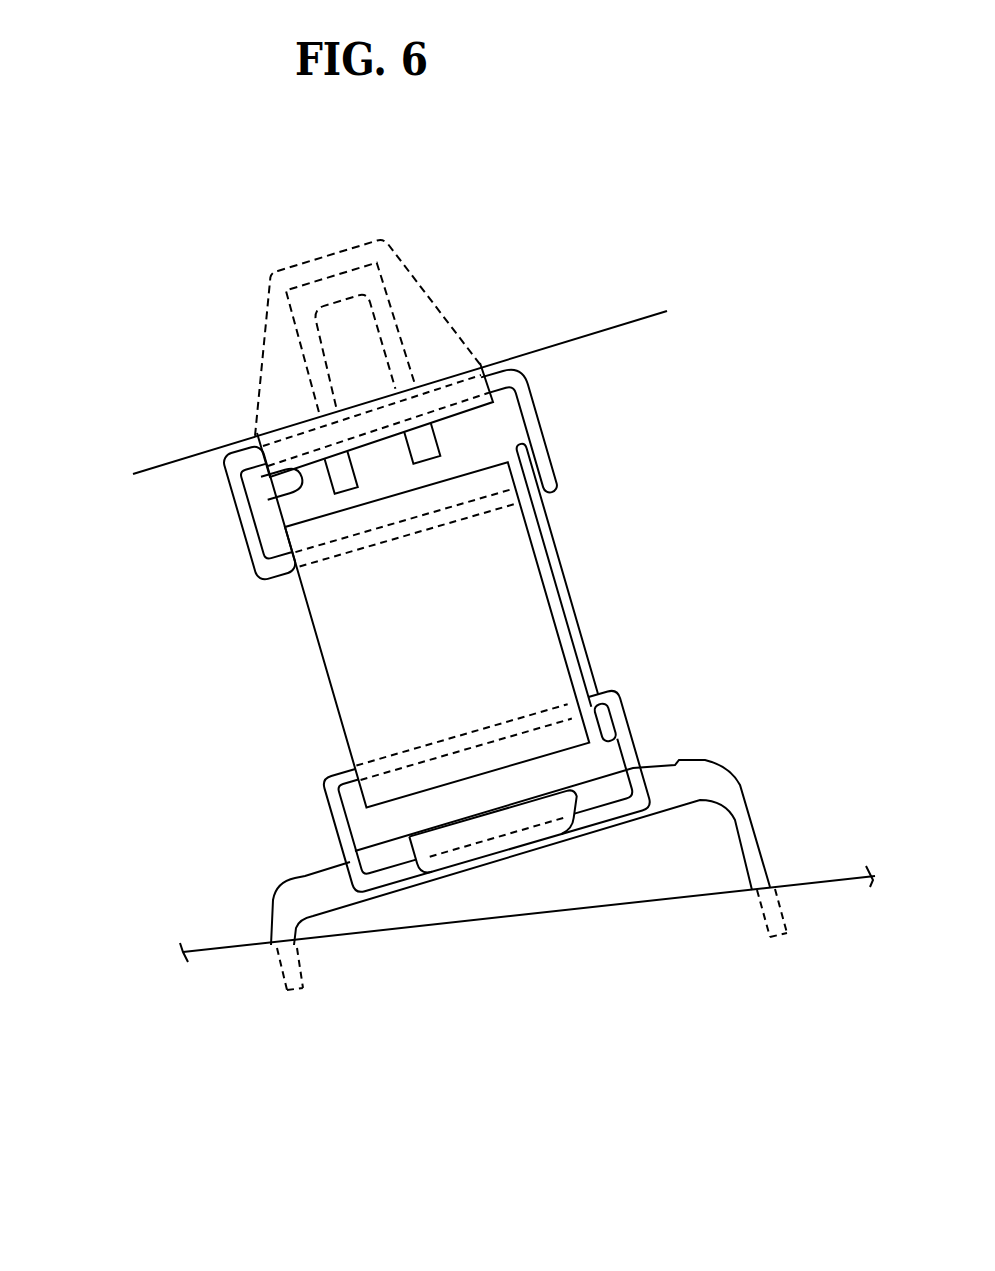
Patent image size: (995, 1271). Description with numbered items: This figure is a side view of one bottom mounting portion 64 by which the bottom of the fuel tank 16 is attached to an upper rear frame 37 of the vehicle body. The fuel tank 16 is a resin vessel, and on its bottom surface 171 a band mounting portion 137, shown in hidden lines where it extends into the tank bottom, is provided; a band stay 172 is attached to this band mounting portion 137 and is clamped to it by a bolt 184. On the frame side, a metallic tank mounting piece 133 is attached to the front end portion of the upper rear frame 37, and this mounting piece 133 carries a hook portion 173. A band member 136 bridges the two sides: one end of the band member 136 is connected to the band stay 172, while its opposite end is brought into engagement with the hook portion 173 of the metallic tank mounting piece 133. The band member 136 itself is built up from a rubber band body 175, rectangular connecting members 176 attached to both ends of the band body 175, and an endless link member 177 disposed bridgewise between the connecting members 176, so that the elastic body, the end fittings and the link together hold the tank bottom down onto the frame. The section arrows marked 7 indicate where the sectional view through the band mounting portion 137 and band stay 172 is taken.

The section line 7- 7 is at (322, 252).
The fuel tank 16 is at (133, 150).
The upper rear frame 37 is at (232, 946).
The bottom mounting portion 64 is at (527, 208).
The metallic tank mounting piece 133 is at (717, 783).
The band member 136 is at (327, 672).
The band mounting portion 137 is at (259, 370).
The bottom surface 171 is at (590, 335).
The band stay 172 is at (260, 500).
The hook portion 173 is at (533, 798).
The rubber band body 175 is at (360, 720).
The connecting member 176 is at (533, 425).
The endless link member 177 is at (556, 529).
The bolt 184 is at (333, 483).